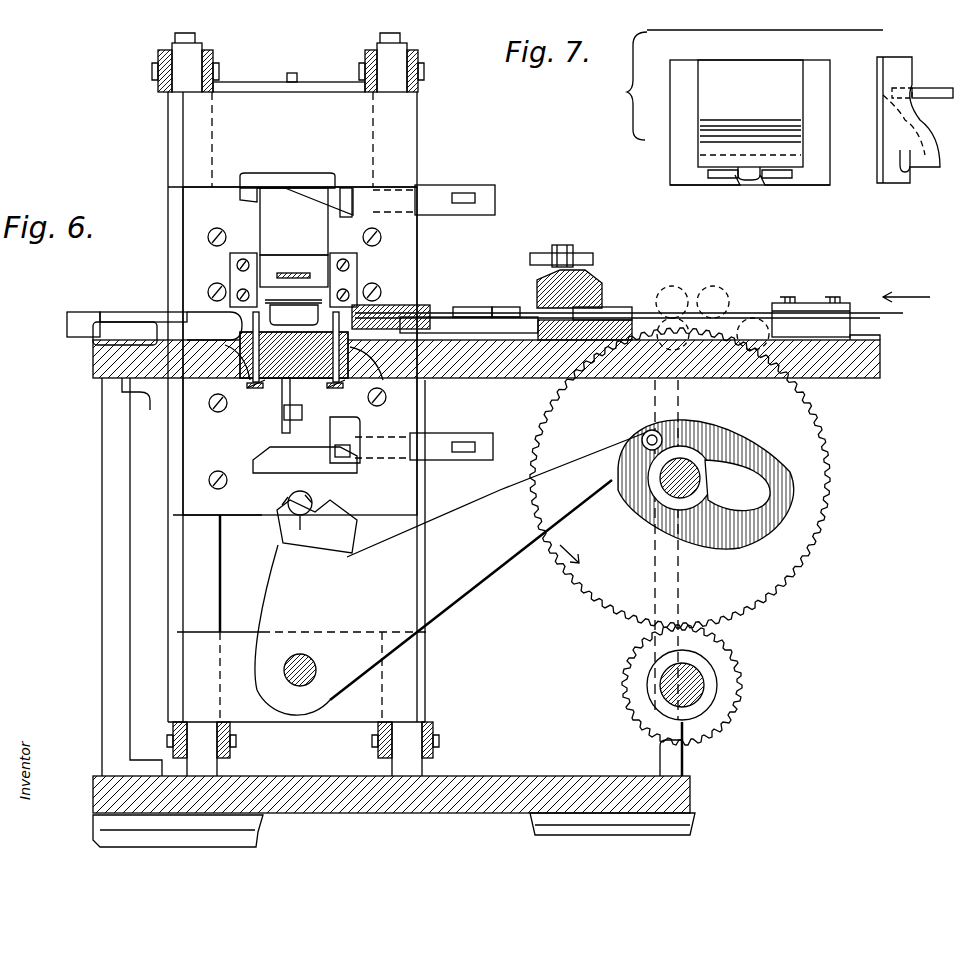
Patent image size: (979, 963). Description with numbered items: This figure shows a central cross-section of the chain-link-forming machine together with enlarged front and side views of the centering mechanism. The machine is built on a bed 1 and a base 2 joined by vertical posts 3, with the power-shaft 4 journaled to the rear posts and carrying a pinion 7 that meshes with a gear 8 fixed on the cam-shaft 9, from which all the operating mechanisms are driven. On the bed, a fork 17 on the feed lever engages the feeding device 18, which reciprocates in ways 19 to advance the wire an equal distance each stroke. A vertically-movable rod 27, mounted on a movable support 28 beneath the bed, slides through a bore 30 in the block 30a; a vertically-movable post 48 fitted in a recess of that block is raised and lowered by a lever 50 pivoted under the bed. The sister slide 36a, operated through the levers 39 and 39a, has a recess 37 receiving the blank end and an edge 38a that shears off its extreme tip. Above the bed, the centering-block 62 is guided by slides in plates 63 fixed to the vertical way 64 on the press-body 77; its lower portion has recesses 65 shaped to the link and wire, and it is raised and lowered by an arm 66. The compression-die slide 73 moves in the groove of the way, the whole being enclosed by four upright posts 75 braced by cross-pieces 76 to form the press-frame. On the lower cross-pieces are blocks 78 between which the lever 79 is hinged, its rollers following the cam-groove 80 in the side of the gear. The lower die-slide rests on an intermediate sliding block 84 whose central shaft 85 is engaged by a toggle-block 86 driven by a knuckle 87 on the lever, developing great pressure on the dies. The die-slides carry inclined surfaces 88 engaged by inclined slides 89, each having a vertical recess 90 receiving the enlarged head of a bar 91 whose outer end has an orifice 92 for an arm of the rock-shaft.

In FIG. 6, the bed 1 is at (92, 362).
In FIG. 6, the base 2 is at (512, 775).
In FIG. 6, the vertical posts 3 is at (122, 600).
In FIG. 6, the power-shaft 4 is at (700, 700).
In FIG. 6, the pinion 7 is at (728, 658).
In FIG. 6, the gear 8 is at (680, 524).
In FIG. 6, the cam-shaft 9 is at (690, 460).
In FIG. 6, the fork 17 is at (578, 250).
In FIG. 6, the feeding device 18 is at (598, 280).
In FIG. 6, the ways 19 is at (498, 325).
In FIG. 6, the vertically-movable rod 27 is at (298, 402).
In FIG. 6, the movable support 28 is at (306, 426).
In FIG. 6, the bores 30 is at (222, 330).
In FIG. 6, the block 30a is at (282, 415).
In FIG. 6, the sister slide 36a is at (435, 310).
In FIG. 6, the recesses 37 is at (185, 320).
In FIG. 6, the shearing edge 38a is at (185, 325).
In FIG. 6, the lever 39 is at (108, 318).
In FIG. 6, the lever 39a is at (470, 307).
In FIG. 6, the vertically-movable post 48 is at (320, 452).
In FIG. 6, the lever 50 is at (305, 461).
In FIG. 6, the centering-block 62 is at (290, 262).
In FIG. 7, the centering-block 62 is at (930, 120).
In FIG. 6, the plates 63 is at (230, 272).
In FIG. 6, the vertical way 64 is at (436, 245).
In FIG. 6, the recesses 65 is at (294, 314).
In FIG. 7, the recesses 65 is at (748, 182).
In FIG. 6, the arm 66 is at (295, 273).
In FIG. 7, the arm 66 is at (935, 88).
In FIG. 6, the slide 73 is at (294, 221).
In FIG. 6, the upright posts 75 is at (418, 180).
In FIG. 6, the cross-pieces 76 is at (295, 404).
In FIG. 6, the press-body 77 is at (287, 161).
In FIG. 6, the blocks 78 is at (307, 630).
In FIG. 6, the lever 79 is at (488, 566).
In FIG. 6, the cam-groove 80 is at (745, 450).
In FIG. 6, the sliding block 84 is at (292, 489).
In FIG. 6, the shaft 85 is at (290, 512).
In FIG. 6, the toggle-block 86 is at (290, 525).
In FIG. 6, the knuckle 87 is at (317, 530).
In FIG. 6, the inclined surfaces 88 is at (285, 188).
In FIG. 6, the inclined slides 89 is at (318, 190).
In FIG. 6, the vertical recess 90 is at (350, 185).
In FIG. 6, the bars 91 is at (425, 322).
In FIG. 6, the orifices 92 is at (480, 198).